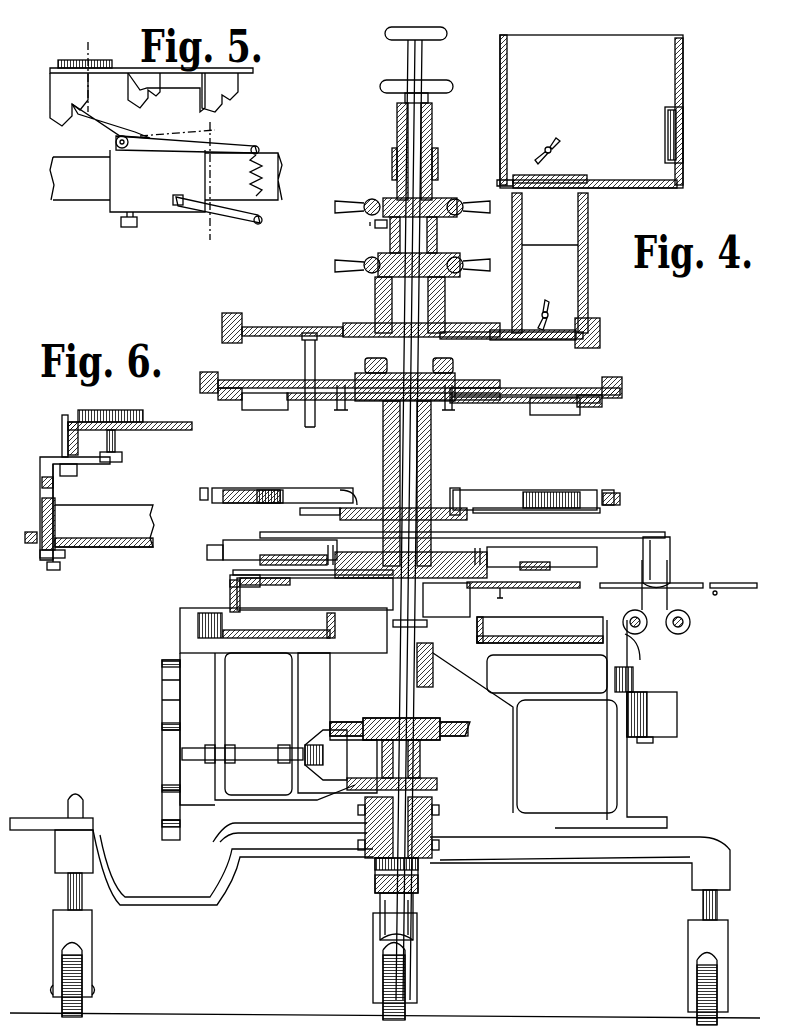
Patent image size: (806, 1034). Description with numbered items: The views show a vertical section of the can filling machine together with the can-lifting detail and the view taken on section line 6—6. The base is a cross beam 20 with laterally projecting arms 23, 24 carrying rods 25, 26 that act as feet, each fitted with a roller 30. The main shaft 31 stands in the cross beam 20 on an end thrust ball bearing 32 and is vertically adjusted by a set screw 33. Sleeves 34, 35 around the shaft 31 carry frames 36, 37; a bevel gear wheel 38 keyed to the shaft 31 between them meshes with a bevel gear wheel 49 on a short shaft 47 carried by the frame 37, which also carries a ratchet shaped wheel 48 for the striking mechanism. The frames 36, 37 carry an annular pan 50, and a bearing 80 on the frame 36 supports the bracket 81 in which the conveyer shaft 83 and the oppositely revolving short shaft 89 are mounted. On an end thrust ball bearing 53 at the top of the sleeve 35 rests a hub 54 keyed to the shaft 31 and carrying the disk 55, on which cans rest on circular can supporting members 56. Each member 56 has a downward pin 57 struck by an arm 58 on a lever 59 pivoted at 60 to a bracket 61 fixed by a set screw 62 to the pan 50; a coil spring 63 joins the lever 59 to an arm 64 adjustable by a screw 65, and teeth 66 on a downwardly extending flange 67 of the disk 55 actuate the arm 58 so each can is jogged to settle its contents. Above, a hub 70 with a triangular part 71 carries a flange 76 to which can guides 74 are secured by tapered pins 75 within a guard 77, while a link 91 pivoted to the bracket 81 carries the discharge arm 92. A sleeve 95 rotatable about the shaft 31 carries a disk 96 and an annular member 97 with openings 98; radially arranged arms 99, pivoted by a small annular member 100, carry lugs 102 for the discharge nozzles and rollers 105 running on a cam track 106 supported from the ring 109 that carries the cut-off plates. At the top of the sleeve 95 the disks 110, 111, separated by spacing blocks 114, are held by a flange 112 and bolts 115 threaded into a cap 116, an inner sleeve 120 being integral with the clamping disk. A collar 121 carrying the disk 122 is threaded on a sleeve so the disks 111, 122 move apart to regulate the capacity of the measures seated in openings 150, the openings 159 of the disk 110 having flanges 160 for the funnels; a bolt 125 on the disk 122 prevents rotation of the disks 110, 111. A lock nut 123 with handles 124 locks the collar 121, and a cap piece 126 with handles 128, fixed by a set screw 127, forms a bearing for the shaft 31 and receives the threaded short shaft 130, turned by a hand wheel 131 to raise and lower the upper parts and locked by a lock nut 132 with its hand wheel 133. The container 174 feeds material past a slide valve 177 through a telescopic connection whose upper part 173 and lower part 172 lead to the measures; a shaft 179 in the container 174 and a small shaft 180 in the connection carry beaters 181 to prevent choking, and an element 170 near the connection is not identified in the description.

In FIG. 5, the section line 6 is at (147, 140).
In FIG. 5, the can supporting member 56 is at (118, 52).
In FIG. 6, the can supporting member 56 is at (135, 411).
In FIG. 4, the can supporting member 56 is at (215, 545).
In FIG. 5, the disk 55 is at (168, 72).
In FIG. 6, the disk 55 is at (131, 438).
In FIG. 4, the disk 55 is at (523, 593).
In FIG. 5, the flange 67 is at (223, 92).
In FIG. 5, the teeth 66 is at (210, 105).
In FIG. 6, the teeth 66 is at (62, 428).
In FIG. 4, the teeth 66 is at (230, 595).
In FIG. 5, the pivot 60 is at (110, 148).
In FIG. 6, the pivot 60 is at (42, 470).
In FIG. 5, the lever 59 is at (178, 147).
In FIG. 6, the lever 59 is at (53, 482).
In FIG. 5, the bracket 61 is at (166, 181).
In FIG. 6, the bracket 61 is at (36, 522).
In FIG. 5, the coil spring 63 is at (262, 168).
In FIG. 5, the set screw 62 is at (130, 227).
In FIG. 6, the set screw 62 is at (53, 570).
In FIG. 5, the screw 65 is at (176, 207).
In FIG. 6, the screw 65 is at (31, 543).
In FIG. 5, the arm 64 is at (240, 212).
In FIG. 6, the pin 57 is at (115, 440).
In FIG. 4, the pin 57 is at (240, 575).
In FIG. 6, the arm 58 is at (105, 462).
In FIG. 6, the pan 50 is at (104, 526).
In FIG. 4, the pan 50 is at (520, 617).
In FIG. 4, the hand wheel 131 is at (435, 38).
In FIG. 4, the hand wheel 133 is at (440, 83).
In FIG. 4, the lock nut 132 is at (428, 98).
In FIG. 4, the short shaft 130 is at (425, 140).
In FIG. 4, the handles 128 is at (495, 192).
In FIG. 4, the cap piece 126 is at (462, 217).
In FIG. 4, the handles 124 is at (350, 262).
In FIG. 4, the set screw 127 is at (358, 235).
In FIG. 4, the lock nut 123 is at (445, 256).
In FIG. 4, the collar 121 is at (445, 300).
In FIG. 4, the inner sleeve 120 is at (445, 323).
In FIG. 4, the disk 122 is at (290, 327).
In FIG. 4, the cap 116 is at (417, 355).
In FIG. 4, the spacing blocks 114 is at (350, 385).
In FIG. 4, the disk 111 is at (500, 388).
In FIG. 4, the ring 109 is at (622, 384).
In FIG. 4, the openings 150 is at (240, 382).
In FIG. 4, the flange 160 is at (225, 400).
In FIG. 4, the openings 159 is at (265, 410).
In FIG. 4, the flange 112 is at (355, 400).
In FIG. 4, the bolt 125 is at (315, 420).
In FIG. 4, the bolts 115 is at (350, 408).
In FIG. 4, the disk 110 is at (505, 410).
In FIG. 4, the sleeve 95 is at (440, 448).
In FIG. 4, the roller 105 is at (204, 488).
In FIG. 4, the openings 98 is at (245, 490).
In FIG. 4, the lugs 102 is at (270, 490).
In FIG. 4, the arms 99 is at (320, 488).
In FIG. 4, the annular member 100 is at (350, 490).
In FIG. 4, the cam track 106 is at (620, 498).
In FIG. 4, the discharge arm 92 is at (640, 532).
In FIG. 4, the guard 77 is at (240, 540).
In FIG. 4, the can guides 74 is at (280, 555).
In FIG. 4, the annular member 97 is at (317, 520).
In FIG. 4, the tapered pins 75 is at (330, 545).
In FIG. 4, the disk 96 is at (370, 508).
In FIG. 4, the hub 70 is at (450, 545).
In FIG. 4, the flange 76 is at (542, 554).
In FIG. 4, the link 91 is at (670, 562).
In FIG. 4, the hub 54 is at (450, 598).
In FIG. 4, the short shaft 89 is at (690, 622).
In FIG. 4, the triangular part 71 is at (313, 590).
In FIG. 4, the end thrust ball bearing 53 is at (440, 628).
In FIG. 4, the shaft 83 is at (635, 634).
In FIG. 4, the bracket 81 is at (660, 640).
In FIG. 4, the ratchet shaped wheel 48 is at (162, 683).
In FIG. 4, the frame 37 is at (298, 688).
In FIG. 4, the sleeve 35 is at (410, 680).
In FIG. 4, the bevel gear wheel 38 is at (445, 720).
In FIG. 4, the frame 36 is at (548, 700).
In FIG. 4, the bearing 80 is at (677, 712).
In FIG. 4, the short shaft 47 is at (268, 738).
In FIG. 4, the bevel gear wheel 49 is at (335, 755).
In FIG. 4, the sleeve 34 is at (420, 765).
In FIG. 4, the rod 25 is at (68, 890).
In FIG. 4, the arm 23 is at (310, 857).
In FIG. 4, the shaft 31 is at (375, 858).
In FIG. 4, the cross beam 20 is at (418, 858).
In FIG. 4, the arm 24 is at (560, 848).
In FIG. 4, the rod 26 is at (717, 905).
In FIG. 4, the end thrust ball bearing 32 is at (375, 885).
In FIG. 4, the set screw 33 is at (413, 920).
In FIG. 4, the roller 30 is at (80, 975).
In FIG. 4, the shaft 179 is at (548, 147).
In FIG. 4, the beaters 181 is at (540, 300).
In FIG. 4, the slide valve 177 is at (565, 180).
In FIG. 4, the upper part 173 is at (600, 200).
In FIG. 4, the container 174 is at (640, 188).
In FIG. 4, the lower part 172 is at (588, 243).
In FIG. 4, the small shaft 180 is at (558, 315).
In FIG. 4, the block 170 is at (600, 335).